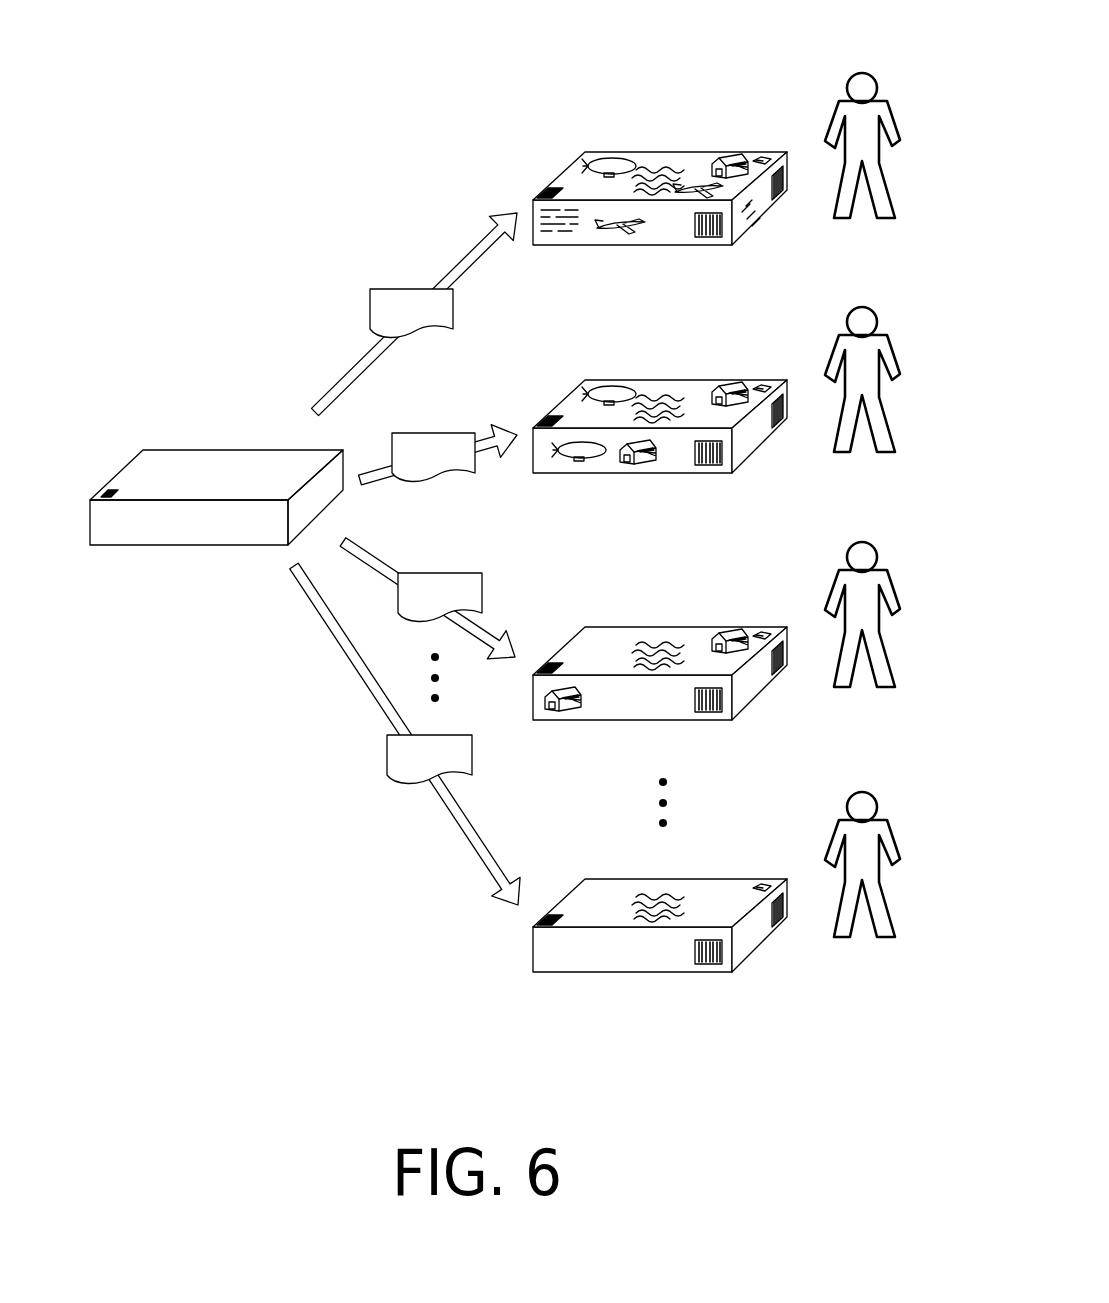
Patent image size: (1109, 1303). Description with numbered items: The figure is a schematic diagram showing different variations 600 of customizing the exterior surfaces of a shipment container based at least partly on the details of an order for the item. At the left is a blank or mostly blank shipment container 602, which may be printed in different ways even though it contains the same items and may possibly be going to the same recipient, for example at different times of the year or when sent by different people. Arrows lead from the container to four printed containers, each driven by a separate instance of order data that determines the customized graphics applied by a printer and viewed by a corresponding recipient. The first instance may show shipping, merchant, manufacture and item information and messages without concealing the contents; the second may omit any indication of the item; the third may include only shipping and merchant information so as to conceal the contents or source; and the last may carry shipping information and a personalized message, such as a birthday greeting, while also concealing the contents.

The variations of customization 600 is at (393, 52).
The shipment container 602 is at (223, 462).